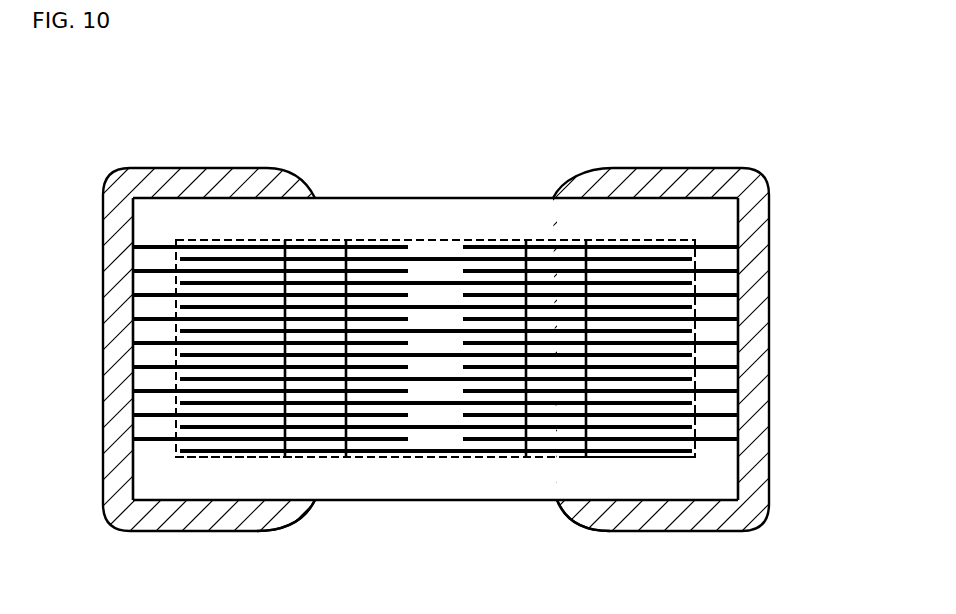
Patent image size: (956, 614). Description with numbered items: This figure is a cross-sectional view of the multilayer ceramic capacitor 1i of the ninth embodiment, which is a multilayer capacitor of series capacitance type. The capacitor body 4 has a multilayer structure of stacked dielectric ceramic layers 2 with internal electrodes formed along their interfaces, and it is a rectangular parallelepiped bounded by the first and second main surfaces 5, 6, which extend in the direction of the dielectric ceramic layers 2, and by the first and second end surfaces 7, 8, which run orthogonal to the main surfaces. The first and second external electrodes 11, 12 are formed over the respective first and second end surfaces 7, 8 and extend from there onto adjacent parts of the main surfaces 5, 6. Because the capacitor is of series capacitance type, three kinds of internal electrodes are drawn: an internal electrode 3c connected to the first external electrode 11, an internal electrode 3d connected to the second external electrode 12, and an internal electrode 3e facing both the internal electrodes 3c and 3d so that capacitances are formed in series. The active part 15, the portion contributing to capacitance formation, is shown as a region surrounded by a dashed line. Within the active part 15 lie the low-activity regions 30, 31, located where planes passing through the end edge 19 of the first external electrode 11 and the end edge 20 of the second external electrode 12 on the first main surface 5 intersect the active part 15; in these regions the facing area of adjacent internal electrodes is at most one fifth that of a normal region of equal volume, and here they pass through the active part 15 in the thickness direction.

The multilayer ceramic capacitor 1i is at (154, 109).
The dielectric ceramic layer 2 is at (517, 265).
The internal electrode 3c is at (248, 294).
The internal electrode 3d is at (673, 293).
The internal electrode 3e is at (455, 283).
The capacitor body 4 is at (432, 328).
The first main surface 5 is at (435, 500).
The second main surface 6 is at (377, 198).
The first end surface 7 is at (130, 350).
The second end surface 8 is at (740, 313).
The first external electrode 11 is at (108, 271).
The second external electrode 12 is at (757, 248).
The active part 15 is at (686, 232).
The end edge 19 is at (315, 500).
The end edge 20 is at (557, 500).
The low-activity region 30 is at (298, 457).
The low-activity region 31 is at (567, 457).